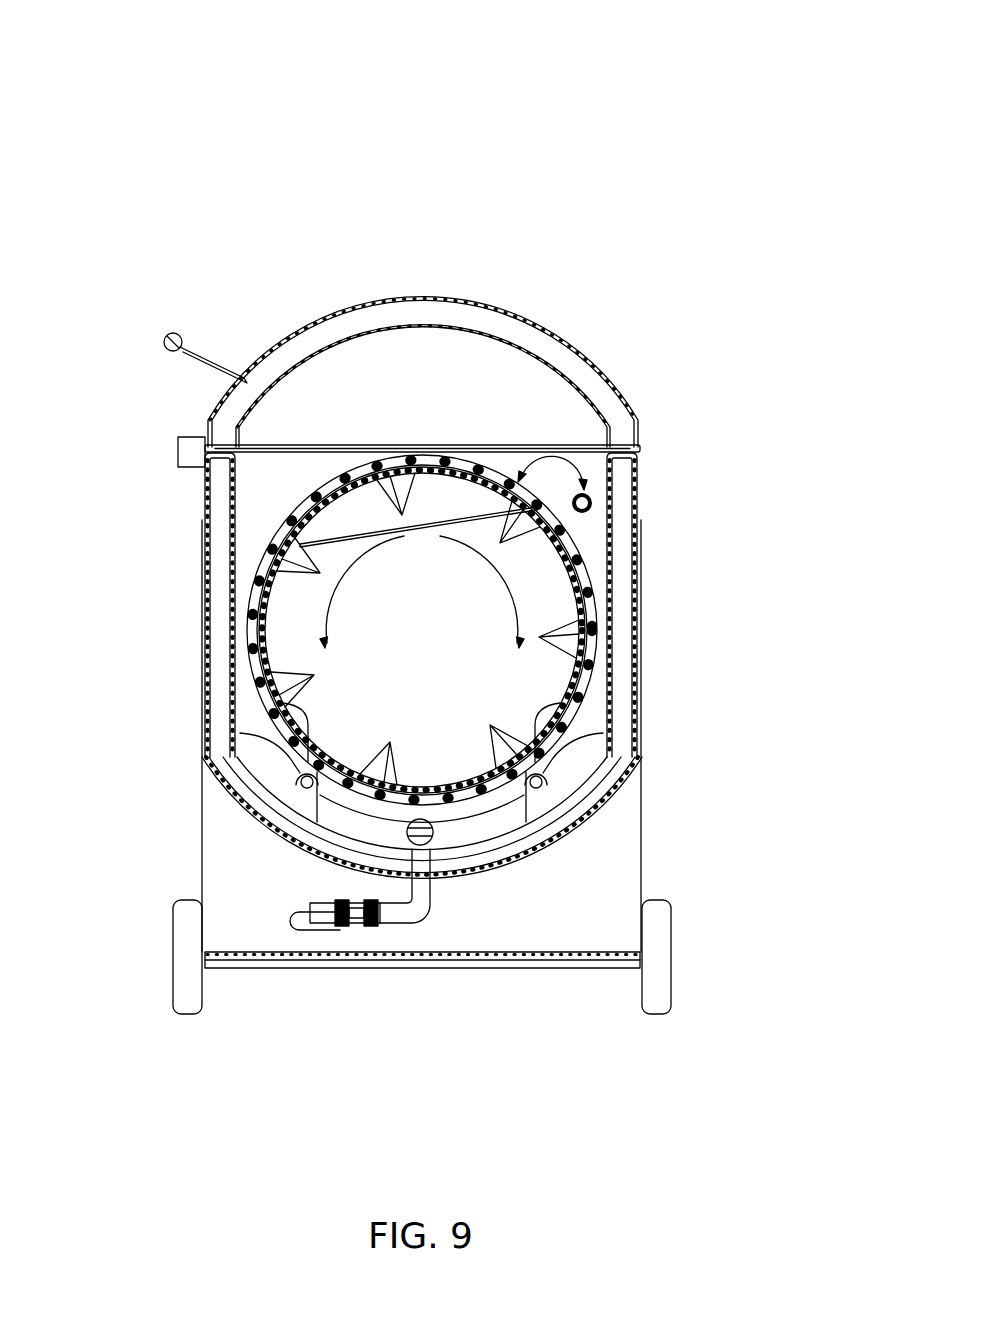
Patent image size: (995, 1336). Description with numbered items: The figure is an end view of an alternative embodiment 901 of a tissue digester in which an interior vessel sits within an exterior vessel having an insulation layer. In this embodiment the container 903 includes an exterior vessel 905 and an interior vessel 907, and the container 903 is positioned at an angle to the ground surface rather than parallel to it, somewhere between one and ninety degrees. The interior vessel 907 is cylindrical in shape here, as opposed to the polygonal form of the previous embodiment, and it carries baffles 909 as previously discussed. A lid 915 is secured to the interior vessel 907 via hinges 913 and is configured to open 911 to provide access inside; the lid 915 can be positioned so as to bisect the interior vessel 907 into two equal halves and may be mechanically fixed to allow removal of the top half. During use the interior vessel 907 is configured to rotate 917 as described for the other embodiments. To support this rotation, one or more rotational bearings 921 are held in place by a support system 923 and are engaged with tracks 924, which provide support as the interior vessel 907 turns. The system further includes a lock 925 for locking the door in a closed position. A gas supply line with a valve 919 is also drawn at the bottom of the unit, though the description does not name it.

The alternative embodiment 901 is at (754, 102).
The container 903 is at (642, 270).
The exterior vessel 905 is at (142, 537).
The interior vessel 907 is at (578, 714).
The baffles 909 is at (578, 580).
The opening of the lid 911 is at (537, 520).
The hinges 913 is at (553, 452).
The lid 915 is at (478, 474).
The rotation of the interior vessel 917 is at (426, 540).
The gas supply pipe and valve 919 is at (405, 925).
The rotational bearings 921 is at (285, 703).
The support system 923 is at (240, 735).
The tracks 924 is at (256, 638).
The lock 925 is at (177, 443).